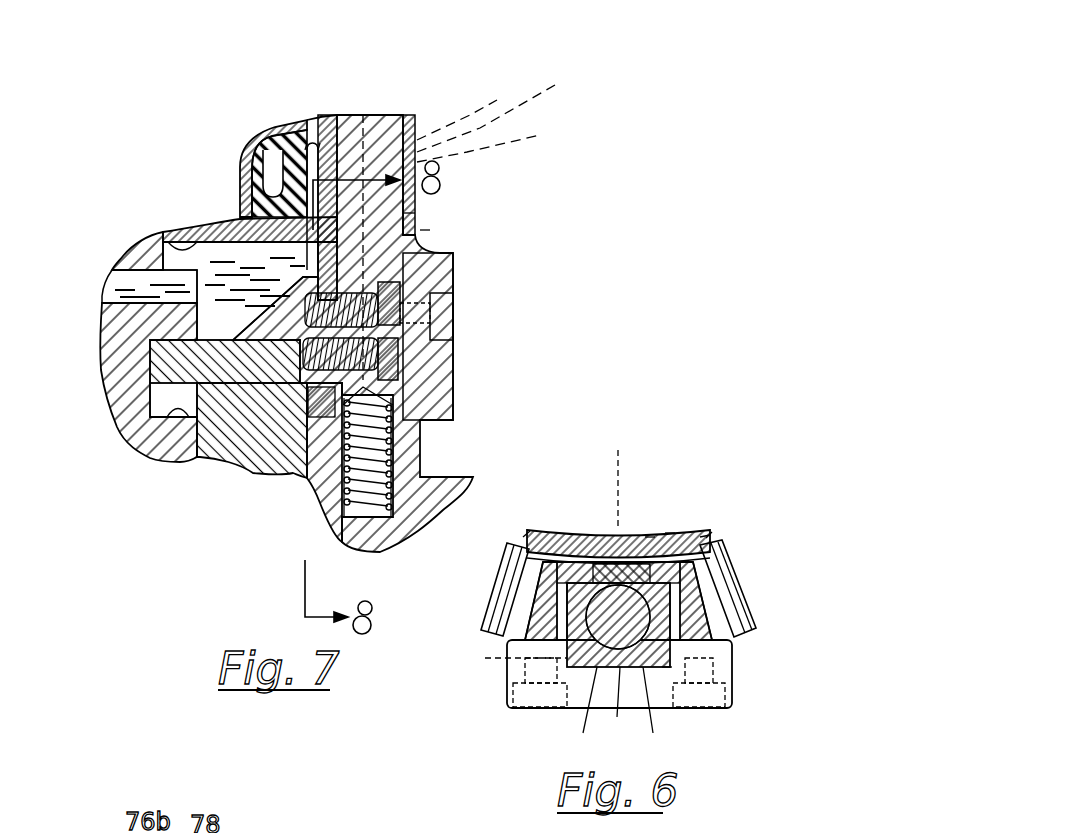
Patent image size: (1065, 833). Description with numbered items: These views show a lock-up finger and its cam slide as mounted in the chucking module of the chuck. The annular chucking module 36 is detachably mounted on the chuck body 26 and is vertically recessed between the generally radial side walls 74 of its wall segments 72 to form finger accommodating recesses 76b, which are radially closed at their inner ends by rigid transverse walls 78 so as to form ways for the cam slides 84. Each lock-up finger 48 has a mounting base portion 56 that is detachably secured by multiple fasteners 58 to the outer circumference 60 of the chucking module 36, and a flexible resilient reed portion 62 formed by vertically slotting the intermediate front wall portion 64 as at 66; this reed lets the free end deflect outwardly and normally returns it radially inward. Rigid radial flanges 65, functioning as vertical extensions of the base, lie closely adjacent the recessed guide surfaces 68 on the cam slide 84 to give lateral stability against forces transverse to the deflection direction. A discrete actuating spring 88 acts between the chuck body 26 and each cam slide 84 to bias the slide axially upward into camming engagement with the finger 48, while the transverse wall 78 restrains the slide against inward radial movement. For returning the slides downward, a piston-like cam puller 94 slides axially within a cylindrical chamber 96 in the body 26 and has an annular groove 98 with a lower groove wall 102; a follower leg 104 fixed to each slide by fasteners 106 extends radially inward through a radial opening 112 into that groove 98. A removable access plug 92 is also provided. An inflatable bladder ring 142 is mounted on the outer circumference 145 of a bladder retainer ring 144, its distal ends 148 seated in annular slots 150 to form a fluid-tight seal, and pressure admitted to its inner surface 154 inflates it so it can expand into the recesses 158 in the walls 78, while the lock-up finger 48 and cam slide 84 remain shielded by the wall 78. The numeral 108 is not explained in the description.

In FIG. 7, the chuck body 26 is at (233, 243).
In FIG. 7, the chucking module 36 is at (330, 150).
In FIG. 6, the chucking module 36 is at (712, 553).
In FIG. 7, the lock-up finger 48 is at (458, 248).
In FIG. 6, the lock-up finger 48 is at (663, 678).
In FIG. 7, the mounting base portion 56 is at (447, 383).
In FIG. 6, the mounting base portion 56 is at (505, 697).
In FIG. 7, the fasteners 58 is at (447, 302).
In FIG. 6, the fasteners 58 is at (537, 710).
In FIG. 6, the outer circumference 60 is at (672, 660).
In FIG. 7, the reed portion 62 is at (472, 111).
In FIG. 6, the reed portion 62 is at (615, 705).
In FIG. 7, the front wall portion 64 is at (504, 110).
In FIG. 6, the front wall portion 64 is at (540, 617).
In FIG. 6, the radial flanges 65 is at (547, 625).
In FIG. 7, the slots 66 is at (496, 140).
In FIG. 6, the slots 66 is at (612, 711).
In FIG. 7, the recessed guide surfaces 68 is at (418, 213).
In FIG. 6, the recessed guide surfaces 68 is at (593, 537).
In FIG. 6, the wall segments 72 is at (553, 637).
In FIG. 6, the radial side walls 74 is at (537, 593).
In FIG. 6, the finger accommodating recesses 76b is at (650, 537).
In FIG. 7, the transverse walls 78 is at (417, 132).
In FIG. 6, the transverse walls 78 is at (612, 533).
In FIG. 7, the cam slide 84 is at (420, 230).
In FIG. 6, the cam slide 84 is at (553, 530).
In FIG. 7, the actuating spring 88 is at (340, 488).
In FIG. 6, the actuating spring 88 is at (510, 664).
In FIG. 7, the access plug 92 is at (96, 297).
In FIG. 7, the cam puller 94 is at (107, 322).
In FIG. 7, the cylindrical chamber 96 is at (120, 290).
In FIG. 7, the annular groove 98 is at (143, 407).
In FIG. 7, the lower groove wall 102 is at (167, 418).
In FIG. 7, the follower leg 104 is at (235, 378).
In FIG. 6, the follower leg 104 is at (623, 474).
In FIG. 7, the fasteners 106 is at (392, 292).
In FIG. 7, the plug 108 is at (165, 366).
In FIG. 7, the radial opening 112 is at (165, 240).
In FIG. 7, the bladder ring 142 is at (298, 140).
In FIG. 6, the bladder ring 142 is at (700, 537).
In FIG. 6, the bladder retainer ring 144 is at (697, 537).
In FIG. 7, the outer circumference 145 is at (313, 150).
In FIG. 6, the outer circumference 145 is at (710, 537).
In FIG. 7, the distal ends 148 is at (248, 190).
In FIG. 7, the annular slots 150 is at (264, 158).
In FIG. 6, the inner surface 154 is at (670, 533).
In FIG. 7, the recesses 158 is at (268, 128).
In FIG. 6, the recesses 158 is at (523, 537).